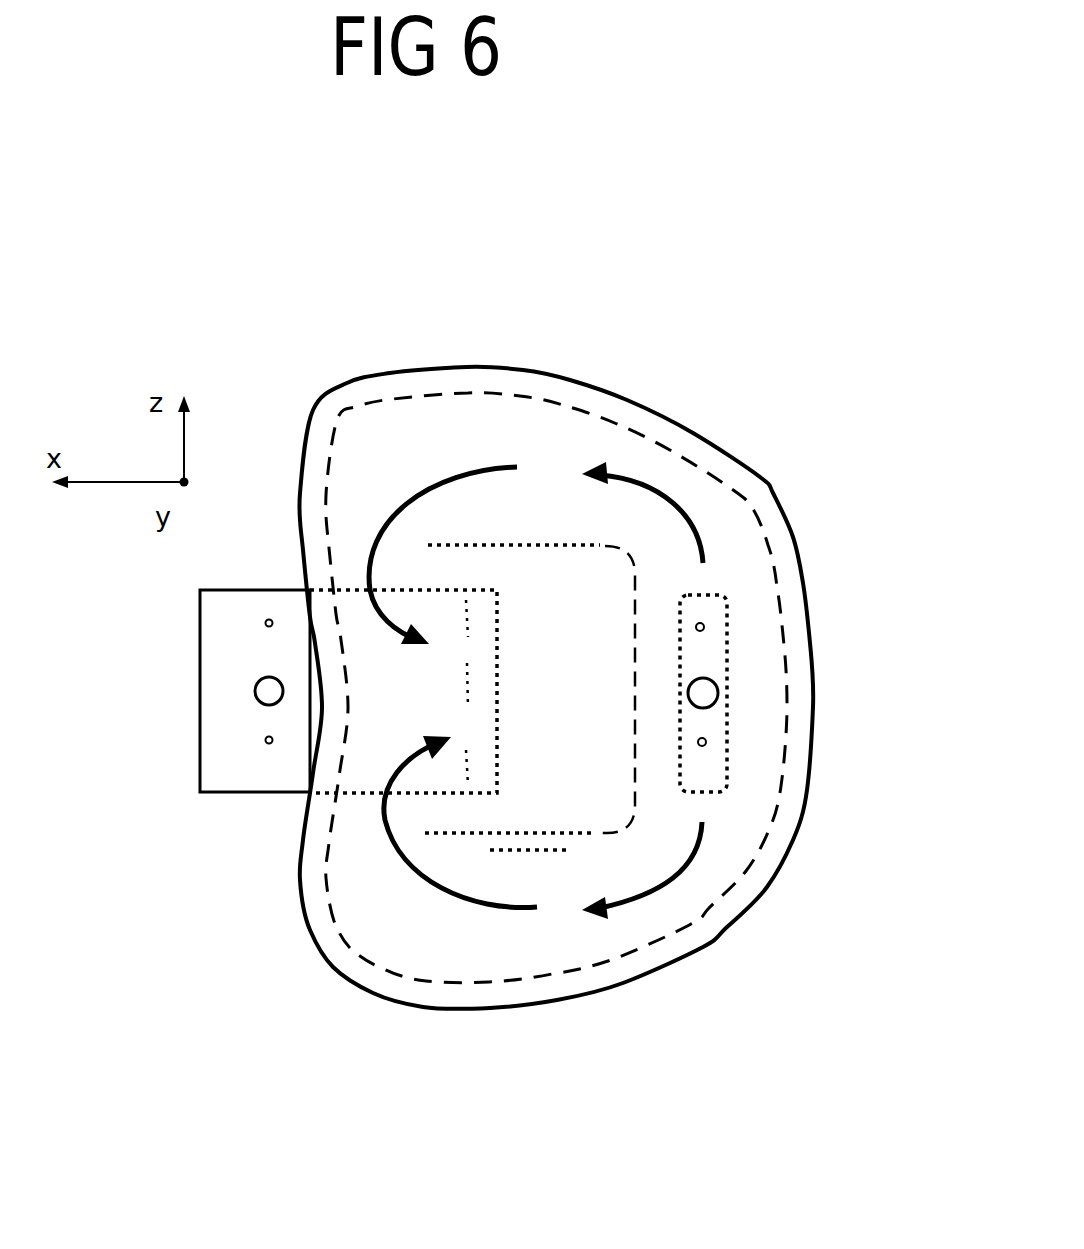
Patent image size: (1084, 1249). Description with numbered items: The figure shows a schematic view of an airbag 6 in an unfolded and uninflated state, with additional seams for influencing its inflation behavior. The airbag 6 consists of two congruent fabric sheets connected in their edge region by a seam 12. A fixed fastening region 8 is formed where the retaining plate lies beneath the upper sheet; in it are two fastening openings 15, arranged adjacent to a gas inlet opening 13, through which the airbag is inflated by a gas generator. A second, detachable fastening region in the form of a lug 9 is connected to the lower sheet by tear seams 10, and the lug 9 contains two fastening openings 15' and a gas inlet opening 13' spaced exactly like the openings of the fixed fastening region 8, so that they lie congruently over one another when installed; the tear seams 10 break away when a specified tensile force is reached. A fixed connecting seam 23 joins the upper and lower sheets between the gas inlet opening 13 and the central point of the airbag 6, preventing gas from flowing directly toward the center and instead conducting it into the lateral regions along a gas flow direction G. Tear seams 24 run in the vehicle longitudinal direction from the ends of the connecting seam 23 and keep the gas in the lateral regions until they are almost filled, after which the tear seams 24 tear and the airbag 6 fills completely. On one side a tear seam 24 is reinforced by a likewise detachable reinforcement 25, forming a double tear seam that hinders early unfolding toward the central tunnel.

The airbag 6 is at (831, 332).
The fastening region 8 is at (707, 725).
The lug 9 is at (216, 753).
The tear seams 10 is at (472, 633).
The seam 12 is at (730, 897).
The gas inlet opening 13 is at (819, 638).
The gas inlet opening 13' is at (182, 711).
The fastening openings 15 is at (804, 565).
The fastening openings 15' is at (192, 718).
The connecting seam 23 is at (637, 787).
The tear seams 24 is at (528, 545).
The reinforcement 25 is at (540, 852).
The gas flow direction G is at (673, 505).